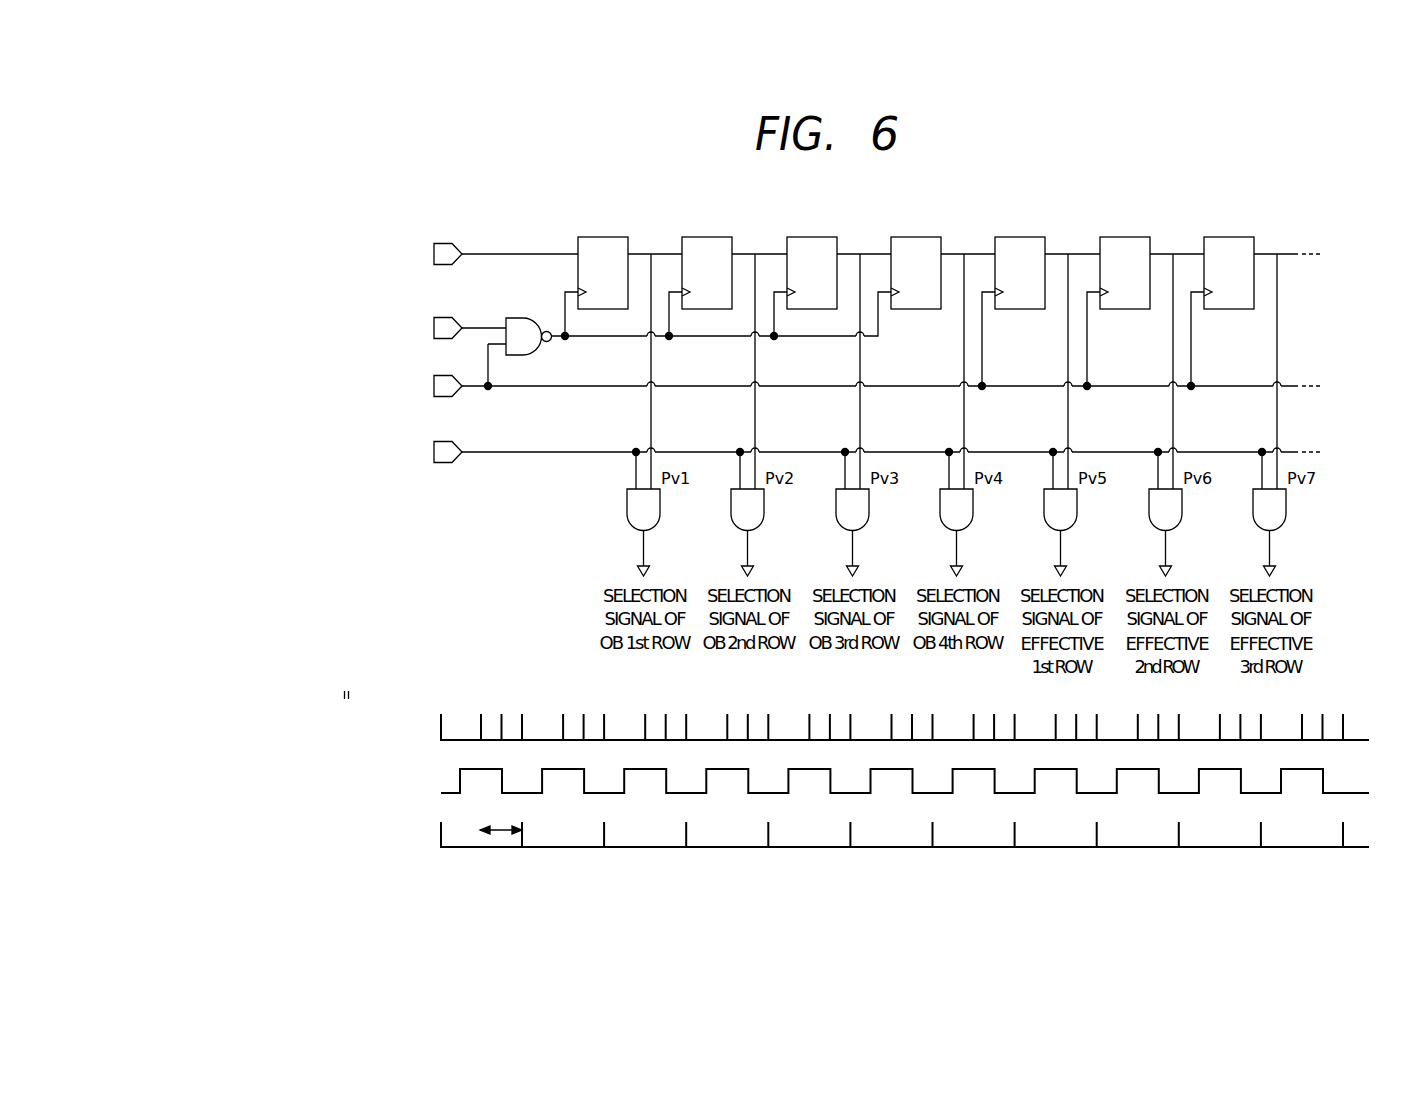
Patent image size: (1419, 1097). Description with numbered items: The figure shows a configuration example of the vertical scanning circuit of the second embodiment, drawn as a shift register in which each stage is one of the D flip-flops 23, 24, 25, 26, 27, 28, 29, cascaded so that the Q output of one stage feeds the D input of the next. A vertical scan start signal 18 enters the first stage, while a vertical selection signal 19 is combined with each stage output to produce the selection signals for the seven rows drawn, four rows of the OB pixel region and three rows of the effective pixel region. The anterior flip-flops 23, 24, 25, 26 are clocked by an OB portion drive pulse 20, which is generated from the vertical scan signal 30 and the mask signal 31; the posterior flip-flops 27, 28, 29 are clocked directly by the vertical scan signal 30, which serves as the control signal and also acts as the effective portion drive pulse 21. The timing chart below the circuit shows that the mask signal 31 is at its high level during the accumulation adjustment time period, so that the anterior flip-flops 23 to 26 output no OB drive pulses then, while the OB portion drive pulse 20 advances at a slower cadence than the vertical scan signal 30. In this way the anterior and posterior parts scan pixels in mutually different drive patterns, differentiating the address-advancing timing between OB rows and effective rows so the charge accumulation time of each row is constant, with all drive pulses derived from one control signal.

The vertical scan start signal (PVST) input 18 is at (275, 222).
The mask signal 31 is at (298, 325).
The vertical scan signal 30 is at (288, 380).
The vertical selection signal 19 is at (288, 442).
The D flip-flop 23 is at (606, 237).
The D flip-flop 24 is at (710, 237).
The D flip-flop 25 is at (815, 237).
The D flip-flop 26 is at (919, 237).
The D flip-flop 27 is at (1023, 237).
The D flip-flop 28 is at (1128, 237).
The D flip-flop 29 is at (1232, 237).
The effective portion drive pulse 21 is at (310, 630).
The OB portion drive pulse 20 is at (308, 828).